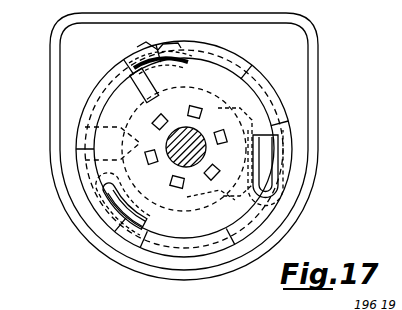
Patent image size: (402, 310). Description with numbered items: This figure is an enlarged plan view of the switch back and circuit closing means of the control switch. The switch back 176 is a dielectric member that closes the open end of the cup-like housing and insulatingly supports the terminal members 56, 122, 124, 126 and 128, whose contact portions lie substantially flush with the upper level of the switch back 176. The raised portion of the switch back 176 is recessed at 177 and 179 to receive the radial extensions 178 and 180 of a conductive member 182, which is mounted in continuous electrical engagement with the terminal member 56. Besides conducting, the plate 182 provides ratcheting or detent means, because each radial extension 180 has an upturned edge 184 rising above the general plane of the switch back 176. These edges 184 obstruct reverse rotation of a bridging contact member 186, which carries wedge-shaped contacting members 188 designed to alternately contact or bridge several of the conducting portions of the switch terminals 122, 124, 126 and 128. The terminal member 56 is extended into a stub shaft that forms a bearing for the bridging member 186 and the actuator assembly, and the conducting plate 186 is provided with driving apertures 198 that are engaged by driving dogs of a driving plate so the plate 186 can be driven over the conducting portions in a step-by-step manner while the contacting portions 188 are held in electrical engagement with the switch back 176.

The switch back 176 is at (291, 35).
The recess 177 is at (227, 41).
The radial extension 178 is at (233, 71).
The recess 179 is at (122, 80).
The radial extension 180 is at (124, 84).
The conductive member 182 is at (220, 113).
The upturned edge 184 is at (147, 100).
The terminal member 124 is at (85, 157).
The driving aperture 198 is at (198, 110).
The terminal member 122 is at (288, 149).
The wedge-shaped contacting member 188 is at (122, 197).
The bridging contact member 186 is at (240, 198).
The terminal member 56 is at (170, 176).
The terminal member 126 is at (217, 242).
The terminal member 128 is at (140, 46).